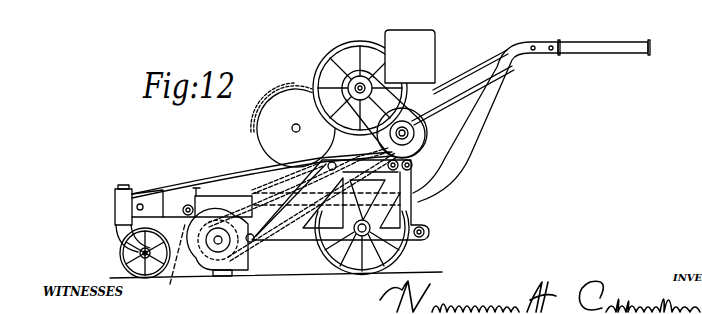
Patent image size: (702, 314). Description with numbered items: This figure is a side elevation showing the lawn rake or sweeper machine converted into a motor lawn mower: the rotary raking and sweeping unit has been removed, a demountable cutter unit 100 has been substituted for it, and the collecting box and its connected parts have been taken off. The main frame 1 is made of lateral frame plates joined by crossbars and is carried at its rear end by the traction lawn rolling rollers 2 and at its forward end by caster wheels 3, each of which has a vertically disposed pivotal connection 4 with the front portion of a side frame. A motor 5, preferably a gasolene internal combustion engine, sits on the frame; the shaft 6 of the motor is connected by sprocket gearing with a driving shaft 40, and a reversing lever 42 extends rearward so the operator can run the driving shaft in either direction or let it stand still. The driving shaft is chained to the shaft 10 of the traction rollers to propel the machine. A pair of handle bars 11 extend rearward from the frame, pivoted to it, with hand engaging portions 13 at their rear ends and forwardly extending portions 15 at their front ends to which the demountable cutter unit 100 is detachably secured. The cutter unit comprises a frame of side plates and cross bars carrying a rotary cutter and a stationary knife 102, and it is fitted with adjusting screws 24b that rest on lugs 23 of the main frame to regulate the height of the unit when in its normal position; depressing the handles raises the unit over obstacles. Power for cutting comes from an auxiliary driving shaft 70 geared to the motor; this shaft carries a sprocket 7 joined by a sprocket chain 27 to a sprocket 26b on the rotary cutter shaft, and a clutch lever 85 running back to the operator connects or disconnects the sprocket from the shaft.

The main frame 1 is at (403, 215).
The traction lawn rolling rollers 2 is at (401, 255).
The caster wheels 3 is at (123, 253).
The pivotal connection 4 is at (118, 210).
The motor 5 is at (426, 50).
The shaft of the engine or motor 6 is at (359, 86).
The sprocket 7 is at (414, 143).
The shaft of the traction rollers 10 is at (356, 236).
The handle bars 11 is at (478, 127).
The hand engaging portions 13 is at (605, 45).
The forwardly extending portions of the handle bars 15 is at (218, 200).
The lug 23 is at (277, 251).
The adjusting screws 24b is at (182, 188).
The sprocket 26b is at (254, 241).
The sprocket chain 27 is at (272, 192).
The driving shaft 40 is at (296, 126).
The reversing lever 42 is at (450, 84).
The auxiliary driving shaft 70 is at (406, 133).
The clutch lever 85 is at (478, 88).
The demountable cutter unit 100 is at (212, 264).
The stationary knife 102 is at (230, 278).